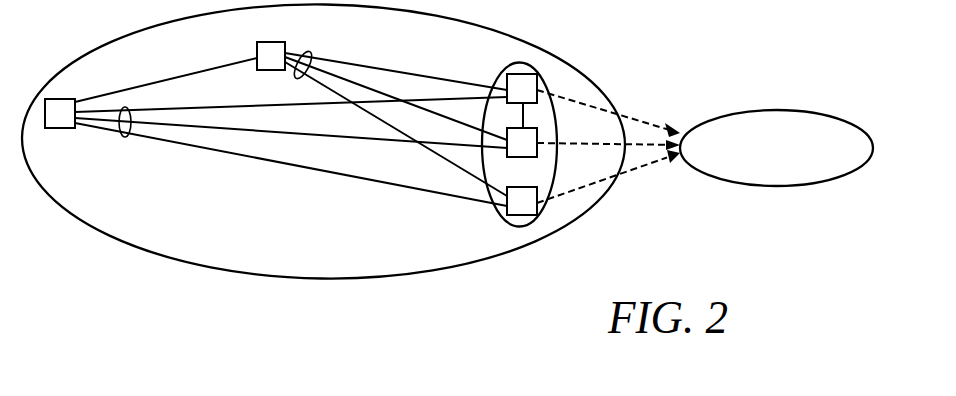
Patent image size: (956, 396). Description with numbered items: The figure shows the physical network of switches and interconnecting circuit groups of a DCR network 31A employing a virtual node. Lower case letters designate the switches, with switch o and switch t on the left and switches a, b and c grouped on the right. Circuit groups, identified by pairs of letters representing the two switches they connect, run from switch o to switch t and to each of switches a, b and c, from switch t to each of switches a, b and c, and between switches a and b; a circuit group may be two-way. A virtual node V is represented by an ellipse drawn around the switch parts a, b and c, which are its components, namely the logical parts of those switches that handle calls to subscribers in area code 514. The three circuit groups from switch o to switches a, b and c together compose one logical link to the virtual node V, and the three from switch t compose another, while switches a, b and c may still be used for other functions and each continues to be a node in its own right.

The call connectivity diagram 31A is at (339, 141).
The originating telephone number node o is at (60, 113).
The terminating telephone number node t is at (271, 56).
The telephone number node a is at (522, 88).
The telephone number node b is at (522, 142).
The telephone number node c is at (522, 201).
The set V of numbers a, b, c V is at (505, 226).
The area code 514 region 514 is at (776, 148).